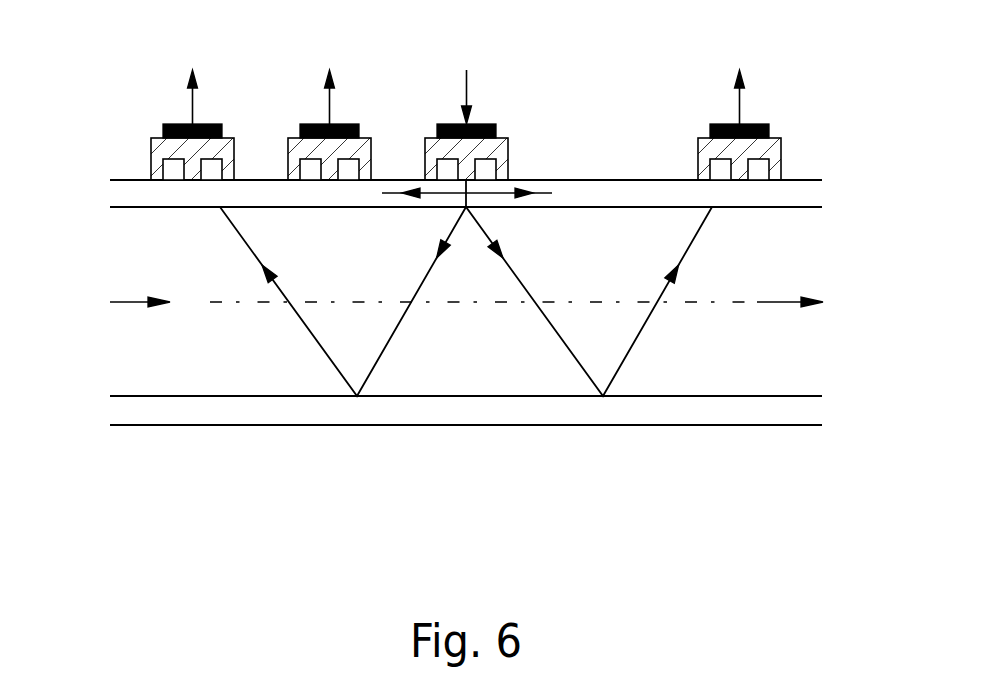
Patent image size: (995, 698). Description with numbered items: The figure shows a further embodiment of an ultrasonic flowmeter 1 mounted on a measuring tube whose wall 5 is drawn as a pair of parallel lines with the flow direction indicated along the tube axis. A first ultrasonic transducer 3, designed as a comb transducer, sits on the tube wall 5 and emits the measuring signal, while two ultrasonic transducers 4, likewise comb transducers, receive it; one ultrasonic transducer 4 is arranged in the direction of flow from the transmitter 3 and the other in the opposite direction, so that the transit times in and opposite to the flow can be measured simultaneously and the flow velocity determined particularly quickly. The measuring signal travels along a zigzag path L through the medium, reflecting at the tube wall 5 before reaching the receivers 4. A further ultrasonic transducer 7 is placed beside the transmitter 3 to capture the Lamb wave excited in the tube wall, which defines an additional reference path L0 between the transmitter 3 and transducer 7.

The ultrasonic flowmeter 1 is at (619, 80).
The first ultrasonic transducer 3 is at (507, 137).
The ultrasonic transducers 4 is at (156, 137).
The measuring tube wall 5 is at (322, 412).
The further ultrasonic transducer 7 is at (300, 137).
The reference path L0 is at (397, 193).
The ultrasonic signal path L is at (642, 333).